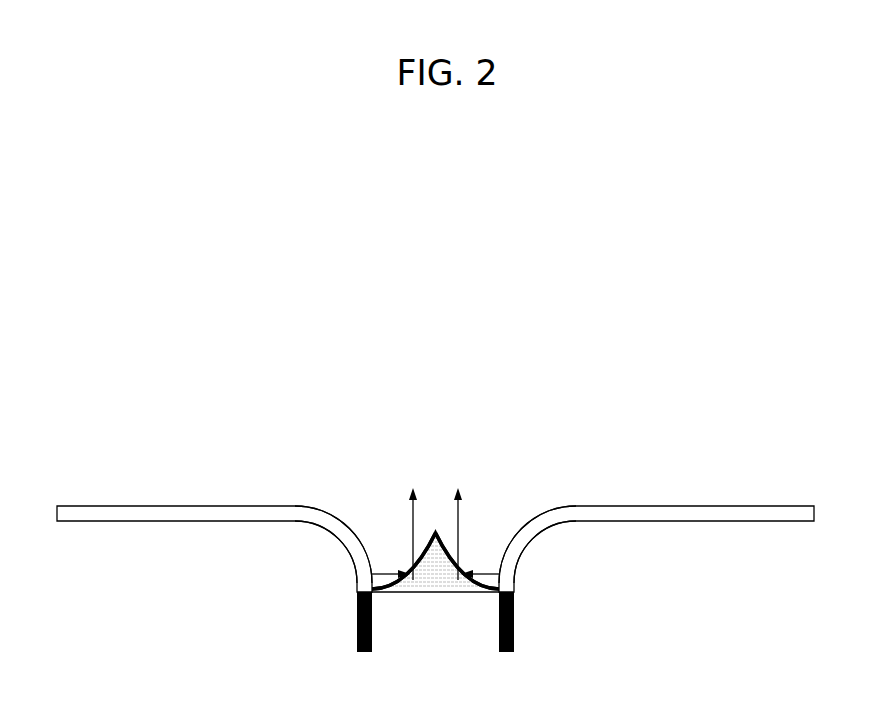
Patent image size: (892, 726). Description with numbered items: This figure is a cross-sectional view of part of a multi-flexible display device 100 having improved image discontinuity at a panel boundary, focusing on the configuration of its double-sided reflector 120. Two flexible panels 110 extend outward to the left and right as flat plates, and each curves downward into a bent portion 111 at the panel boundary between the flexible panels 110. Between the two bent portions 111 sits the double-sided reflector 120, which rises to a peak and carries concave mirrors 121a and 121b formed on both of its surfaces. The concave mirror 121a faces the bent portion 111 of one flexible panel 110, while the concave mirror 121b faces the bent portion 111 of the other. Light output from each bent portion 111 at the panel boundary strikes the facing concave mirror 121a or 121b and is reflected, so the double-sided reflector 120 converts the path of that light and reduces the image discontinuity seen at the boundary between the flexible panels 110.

The multi-flexible display device 100 is at (462, 430).
The flexible panel 110 is at (185, 512).
The bent portion 111 is at (350, 547).
The double-sided reflector 120 is at (433, 593).
The concave mirror 121a is at (426, 553).
The concave mirror 121b is at (445, 553).